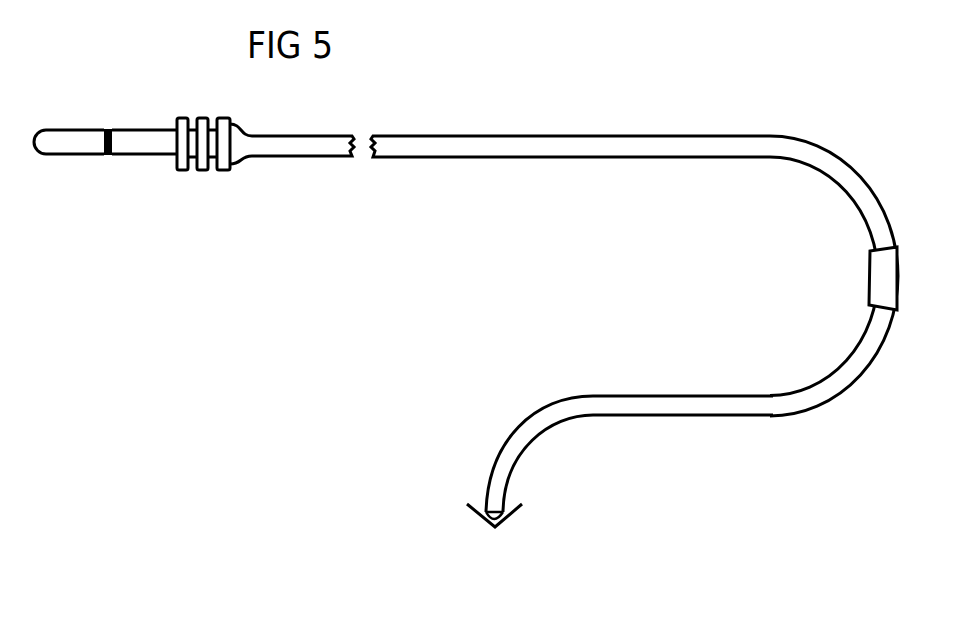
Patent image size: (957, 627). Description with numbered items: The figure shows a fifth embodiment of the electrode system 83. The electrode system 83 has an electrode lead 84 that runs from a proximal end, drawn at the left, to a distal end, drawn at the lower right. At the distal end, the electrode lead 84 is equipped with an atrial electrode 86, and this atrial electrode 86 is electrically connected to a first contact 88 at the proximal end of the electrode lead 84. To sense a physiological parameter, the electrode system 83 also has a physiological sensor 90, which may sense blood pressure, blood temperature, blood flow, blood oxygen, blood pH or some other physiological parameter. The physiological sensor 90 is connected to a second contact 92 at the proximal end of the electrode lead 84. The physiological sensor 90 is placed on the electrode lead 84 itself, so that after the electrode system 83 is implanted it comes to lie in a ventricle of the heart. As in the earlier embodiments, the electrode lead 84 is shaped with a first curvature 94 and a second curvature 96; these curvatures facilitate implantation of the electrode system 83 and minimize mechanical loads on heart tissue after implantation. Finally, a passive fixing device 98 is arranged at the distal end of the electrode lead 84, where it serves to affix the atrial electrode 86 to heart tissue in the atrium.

The electrode system 83 is at (457, 122).
The electrode lead 84 is at (592, 150).
The atrial electrode 86 is at (495, 528).
The first contact 88 is at (59, 147).
The physiological sensor 90 is at (882, 280).
The second contact 92 is at (141, 147).
The first curvature 94 is at (838, 190).
The second curvature 96 is at (525, 424).
The passive fixing device 98 is at (476, 503).